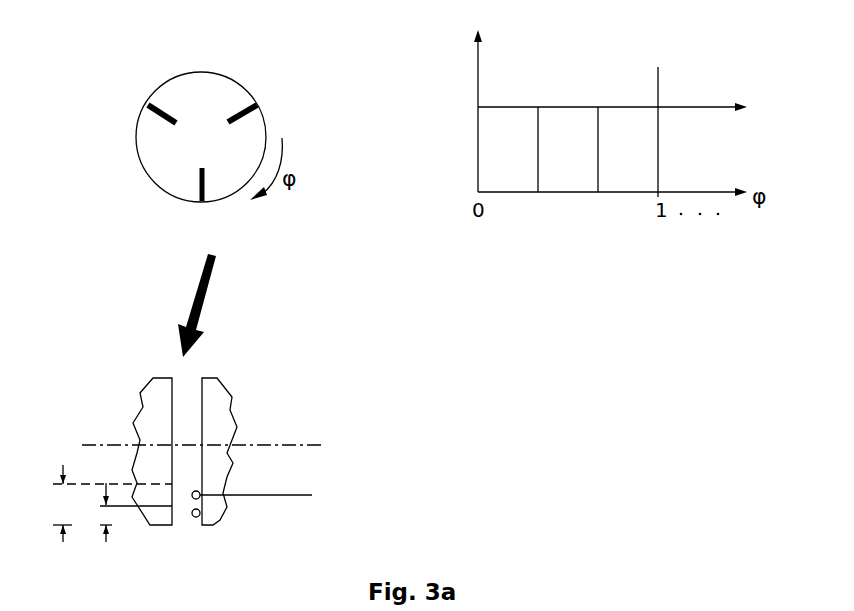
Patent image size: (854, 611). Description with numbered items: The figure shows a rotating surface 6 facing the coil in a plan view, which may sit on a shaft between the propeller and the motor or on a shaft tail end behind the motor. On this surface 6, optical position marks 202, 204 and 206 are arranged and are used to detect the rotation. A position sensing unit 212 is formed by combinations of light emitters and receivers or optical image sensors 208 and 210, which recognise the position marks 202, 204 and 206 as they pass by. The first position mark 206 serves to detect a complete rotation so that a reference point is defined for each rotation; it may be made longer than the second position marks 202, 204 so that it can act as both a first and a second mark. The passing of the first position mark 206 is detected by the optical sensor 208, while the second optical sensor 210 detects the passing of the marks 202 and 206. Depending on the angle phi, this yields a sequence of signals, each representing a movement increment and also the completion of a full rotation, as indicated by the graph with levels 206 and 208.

The rotating disc / rotor 6 is at (245, 70).
The position mark 202 is at (160, 108).
The position mark 204 is at (252, 112).
The first position mark 206 is at (205, 203).
The optical sensor 208 is at (466, 75).
The second optical sensor 210 is at (200, 513).
The position sensing unit 212 is at (222, 485).